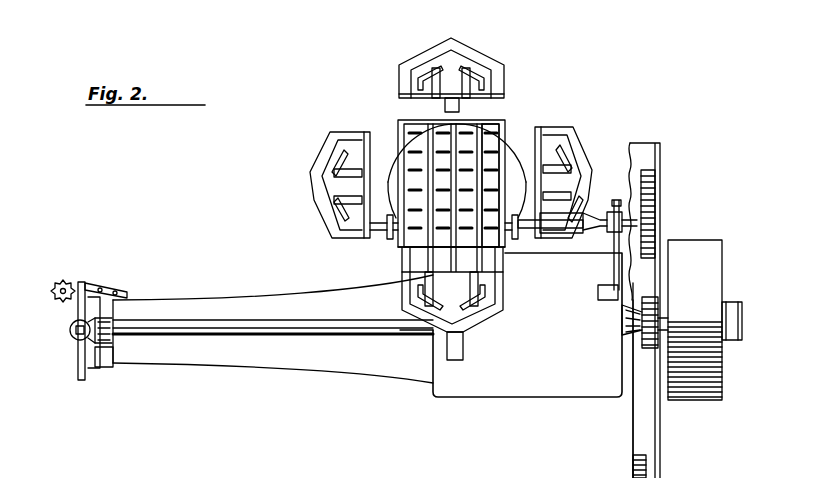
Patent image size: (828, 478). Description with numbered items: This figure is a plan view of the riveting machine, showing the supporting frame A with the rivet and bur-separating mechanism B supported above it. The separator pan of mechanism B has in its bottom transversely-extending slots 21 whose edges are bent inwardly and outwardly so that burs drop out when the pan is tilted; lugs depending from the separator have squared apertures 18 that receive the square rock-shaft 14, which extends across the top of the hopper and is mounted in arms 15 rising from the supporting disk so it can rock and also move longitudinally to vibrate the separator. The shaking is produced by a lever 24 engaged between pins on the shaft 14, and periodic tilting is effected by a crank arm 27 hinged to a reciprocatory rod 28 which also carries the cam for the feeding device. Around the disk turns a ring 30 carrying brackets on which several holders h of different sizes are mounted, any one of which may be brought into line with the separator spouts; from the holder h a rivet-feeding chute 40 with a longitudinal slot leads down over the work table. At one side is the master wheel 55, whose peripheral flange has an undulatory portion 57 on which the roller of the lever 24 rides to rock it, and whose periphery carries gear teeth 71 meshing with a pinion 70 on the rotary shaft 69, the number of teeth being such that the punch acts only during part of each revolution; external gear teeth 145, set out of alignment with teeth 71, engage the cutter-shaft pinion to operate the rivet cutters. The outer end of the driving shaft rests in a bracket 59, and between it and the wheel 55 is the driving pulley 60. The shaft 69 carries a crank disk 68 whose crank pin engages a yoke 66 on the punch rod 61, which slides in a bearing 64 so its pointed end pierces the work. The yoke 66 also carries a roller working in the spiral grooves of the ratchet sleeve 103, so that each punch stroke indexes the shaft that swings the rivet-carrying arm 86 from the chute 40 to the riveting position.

The holder h is at (452, 48).
The rivet and bur-separating mechanism B is at (439, 175).
The transversely-extending slots 21 is at (415, 152).
The squared apertures 18 is at (478, 134).
The ring 30 is at (515, 140).
The arms 15 is at (390, 240).
The rock-shaft 14 is at (562, 234).
The lever 24 is at (592, 218).
The crank arm 27 is at (612, 232).
The reciprocatory rod 28 is at (600, 295).
The undulatory portion 57 is at (640, 165).
The gear teeth 71 is at (656, 204).
The driving pulley 60 is at (700, 260).
The bracket 59 is at (742, 318).
The pinion 70 is at (640, 320).
The external gear teeth 145 is at (633, 468).
The master wheel 55 is at (708, 428).
The supporting frame A is at (528, 398).
The rivet-feeding chute 40 is at (463, 350).
The rotary shaft 69 is at (296, 330).
The yoke 66 is at (80, 378).
The reciprocatory rod 61 is at (70, 328).
The bearing 64 is at (78, 336).
The sleeve 103 is at (60, 282).
The arm 86 is at (125, 292).
The crank disk 68 is at (98, 366).